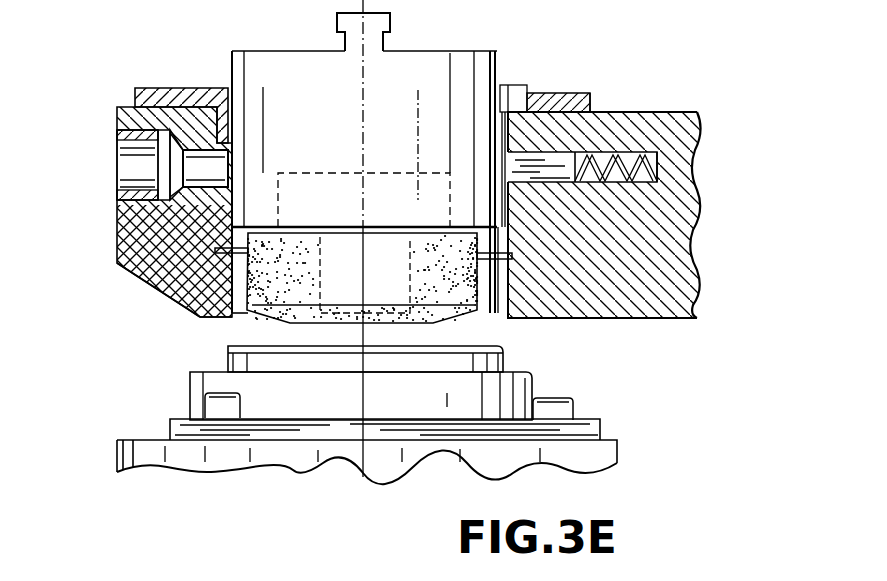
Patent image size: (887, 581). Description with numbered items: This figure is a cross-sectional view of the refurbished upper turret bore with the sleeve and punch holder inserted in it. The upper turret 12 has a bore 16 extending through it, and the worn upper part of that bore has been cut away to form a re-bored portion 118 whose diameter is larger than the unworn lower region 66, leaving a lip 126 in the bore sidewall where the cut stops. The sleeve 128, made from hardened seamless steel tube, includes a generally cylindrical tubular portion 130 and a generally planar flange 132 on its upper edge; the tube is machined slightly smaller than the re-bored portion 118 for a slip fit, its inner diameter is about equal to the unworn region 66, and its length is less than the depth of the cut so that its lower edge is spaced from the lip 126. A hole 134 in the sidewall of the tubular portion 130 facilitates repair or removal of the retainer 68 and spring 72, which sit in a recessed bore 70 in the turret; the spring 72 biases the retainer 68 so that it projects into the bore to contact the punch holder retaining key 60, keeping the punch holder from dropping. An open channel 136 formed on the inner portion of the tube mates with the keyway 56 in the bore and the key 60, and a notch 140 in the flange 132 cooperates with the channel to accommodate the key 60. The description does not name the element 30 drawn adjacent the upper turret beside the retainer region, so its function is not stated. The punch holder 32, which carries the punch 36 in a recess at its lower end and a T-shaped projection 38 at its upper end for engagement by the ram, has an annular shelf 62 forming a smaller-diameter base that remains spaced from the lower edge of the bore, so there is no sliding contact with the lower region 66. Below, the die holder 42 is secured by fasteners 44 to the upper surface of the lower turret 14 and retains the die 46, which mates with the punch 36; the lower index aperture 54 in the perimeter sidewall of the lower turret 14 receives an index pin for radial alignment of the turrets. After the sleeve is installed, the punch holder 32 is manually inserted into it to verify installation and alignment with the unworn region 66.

The upper turret 12 is at (697, 263).
The lower turret 14 is at (113, 466).
The bore 16 is at (195, 305).
The housing 30 is at (556, 64).
The punch holder 32 is at (425, 74).
The punch 36 is at (380, 140).
The T-shaped projection 38 is at (337, 14).
The die holder 42 is at (184, 393).
The fasteners 44 is at (223, 413).
The die 46 is at (507, 359).
The lower index aperture 54 is at (130, 172).
The keyway 56 is at (503, 310).
The punch holder retaining key 60 is at (523, 100).
The annular shelf 62 is at (336, 224).
The lower region 66 is at (247, 313).
The punch holder retainer 68 is at (558, 167).
The recessed bore 70 is at (663, 112).
The spring 72 is at (655, 164).
The re-bored portion 118 is at (213, 252).
The lip 126 is at (190, 280).
The sleeve 128 is at (213, 89).
The tubular portion 130 is at (227, 210).
The flange 132 is at (590, 93).
The hole 134 is at (228, 167).
The open channel 136 is at (503, 213).
The notch 140 is at (545, 68).